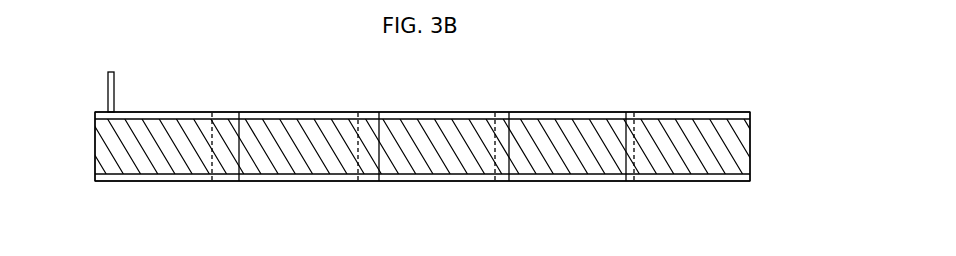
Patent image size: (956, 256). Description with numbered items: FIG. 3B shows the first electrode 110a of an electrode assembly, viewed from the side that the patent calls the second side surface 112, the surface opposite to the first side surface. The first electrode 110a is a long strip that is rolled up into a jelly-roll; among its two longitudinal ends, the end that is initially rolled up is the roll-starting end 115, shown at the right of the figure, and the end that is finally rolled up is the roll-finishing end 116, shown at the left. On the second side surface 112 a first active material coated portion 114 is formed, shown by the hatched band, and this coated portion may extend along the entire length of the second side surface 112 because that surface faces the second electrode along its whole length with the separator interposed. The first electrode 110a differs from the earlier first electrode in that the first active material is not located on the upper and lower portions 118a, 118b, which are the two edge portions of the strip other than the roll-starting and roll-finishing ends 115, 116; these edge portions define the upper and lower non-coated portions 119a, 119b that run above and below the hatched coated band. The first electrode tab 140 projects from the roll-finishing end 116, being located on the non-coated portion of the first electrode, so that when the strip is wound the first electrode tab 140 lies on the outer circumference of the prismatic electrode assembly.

The first electrode 110a is at (174, 79).
The second side surface 112 is at (240, 112).
The first active material coated portion 114 is at (370, 125).
The roll-starting end 115 is at (763, 150).
The roll-finishing end 116 is at (80, 149).
The upper portion 118a is at (332, 99).
The lower portion 118b is at (332, 196).
The upper non-coated portion 119a is at (433, 113).
The lower non-coated portion 119b is at (432, 181).
The first electrode tab 140 is at (110, 92).